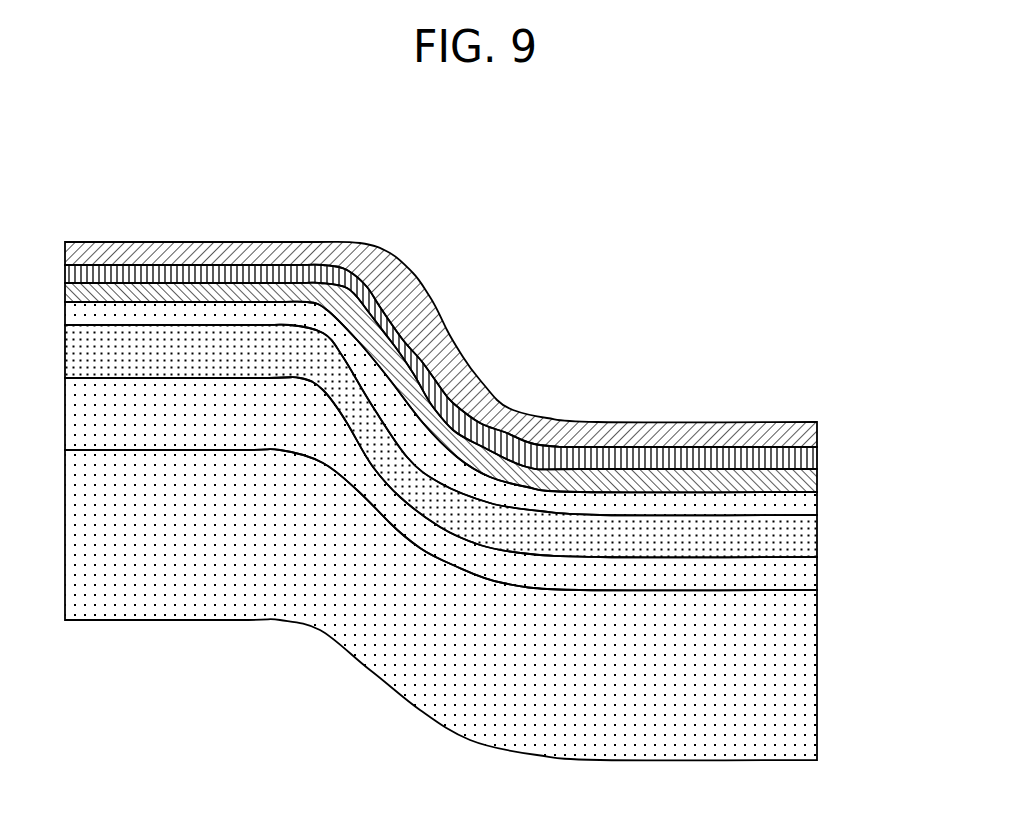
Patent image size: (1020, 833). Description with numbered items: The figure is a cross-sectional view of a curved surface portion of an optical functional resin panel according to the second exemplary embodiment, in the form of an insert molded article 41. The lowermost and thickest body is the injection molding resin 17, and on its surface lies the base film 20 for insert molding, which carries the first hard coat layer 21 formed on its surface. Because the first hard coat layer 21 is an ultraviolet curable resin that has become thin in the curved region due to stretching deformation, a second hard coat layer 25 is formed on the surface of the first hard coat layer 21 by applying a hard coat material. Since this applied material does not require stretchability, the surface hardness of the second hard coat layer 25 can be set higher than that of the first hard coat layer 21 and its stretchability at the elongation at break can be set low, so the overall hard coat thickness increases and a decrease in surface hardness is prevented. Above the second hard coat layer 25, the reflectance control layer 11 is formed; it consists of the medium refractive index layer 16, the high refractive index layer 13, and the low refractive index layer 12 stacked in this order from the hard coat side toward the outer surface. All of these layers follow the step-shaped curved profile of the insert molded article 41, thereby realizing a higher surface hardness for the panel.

The reflectance control layer 11 is at (503, 367).
The low refractive index layer 12 is at (818, 422).
The high refractive index layer 13 is at (797, 457).
The medium refractive index layer 16 is at (884, 387).
The injection molding resin 17 is at (884, 492).
The base film 20 is at (797, 580).
The first hard coat layer 21 is at (797, 542).
The second hard coat layer 25 is at (798, 503).
The insert molded article 41 is at (503, 532).